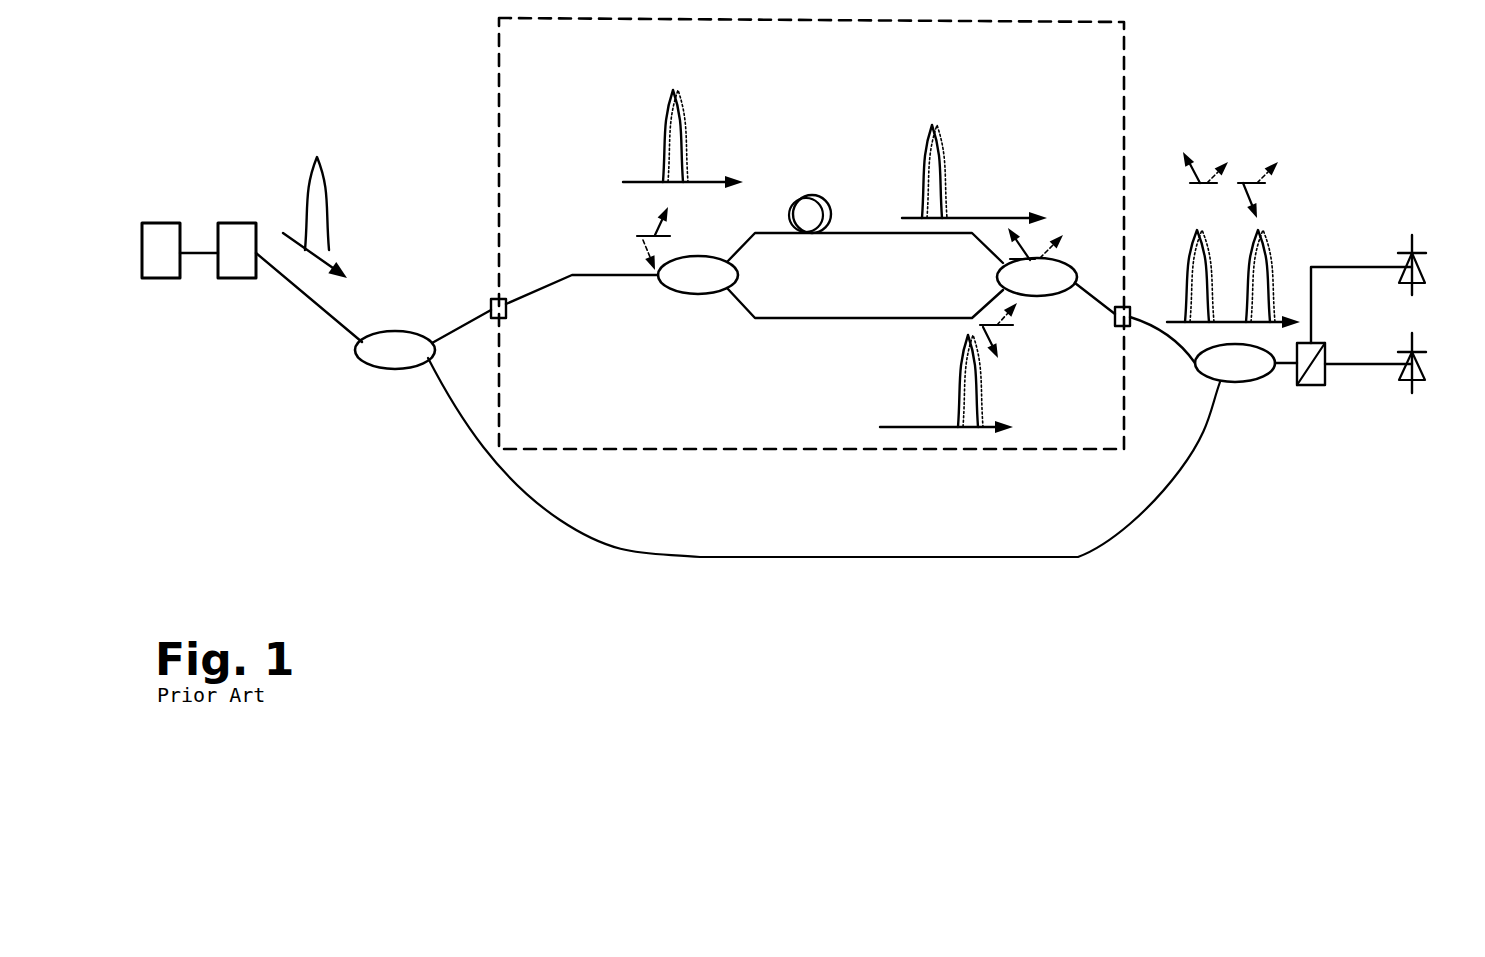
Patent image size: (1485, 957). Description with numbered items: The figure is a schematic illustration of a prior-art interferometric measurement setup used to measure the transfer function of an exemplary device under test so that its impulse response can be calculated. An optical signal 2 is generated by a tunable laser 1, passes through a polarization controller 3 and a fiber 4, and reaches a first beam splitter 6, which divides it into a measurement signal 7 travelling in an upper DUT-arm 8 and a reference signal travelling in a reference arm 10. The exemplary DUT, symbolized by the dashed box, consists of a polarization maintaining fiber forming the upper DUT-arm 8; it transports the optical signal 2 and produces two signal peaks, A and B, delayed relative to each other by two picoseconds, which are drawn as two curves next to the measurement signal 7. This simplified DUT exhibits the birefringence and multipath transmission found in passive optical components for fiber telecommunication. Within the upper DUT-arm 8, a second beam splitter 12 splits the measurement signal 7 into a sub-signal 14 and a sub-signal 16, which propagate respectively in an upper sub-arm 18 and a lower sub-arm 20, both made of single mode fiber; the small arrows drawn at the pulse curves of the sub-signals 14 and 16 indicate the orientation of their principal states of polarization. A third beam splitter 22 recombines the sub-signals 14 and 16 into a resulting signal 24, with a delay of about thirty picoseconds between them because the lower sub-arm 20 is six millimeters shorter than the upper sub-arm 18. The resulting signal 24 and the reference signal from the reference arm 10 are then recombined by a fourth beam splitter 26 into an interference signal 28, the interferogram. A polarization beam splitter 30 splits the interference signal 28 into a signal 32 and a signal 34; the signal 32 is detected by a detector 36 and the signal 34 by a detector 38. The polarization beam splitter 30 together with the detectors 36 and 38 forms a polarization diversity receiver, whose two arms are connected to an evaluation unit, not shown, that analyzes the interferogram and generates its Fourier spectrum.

The tunable laser 1 is at (168, 223).
The optical signal 2 is at (328, 183).
The polarization controller 3 is at (250, 223).
The fiber 4 is at (313, 301).
The first beam splitter 6 is at (393, 370).
The measurement signal 7 is at (662, 133).
The upper DUT-arm 8 is at (548, 286).
The reference arm 10 is at (733, 557).
The second beam splitter 12 is at (693, 294).
The sub-signal 14 is at (921, 160).
The sub-signal 16 is at (957, 367).
The upper sub-arm 18 is at (770, 232).
The lower sub-arm 20 is at (845, 320).
The third beam splitter 22 is at (1070, 265).
The resulting signal 24 is at (1168, 335).
The fourth beam splitter 26 is at (1242, 383).
The interference signal 28 is at (1285, 372).
The polarization beam splitter 30 is at (1308, 388).
The signal 32 is at (1357, 266).
The signal 34 is at (1357, 370).
The detector 36 is at (1408, 250).
The detector 38 is at (1420, 392).